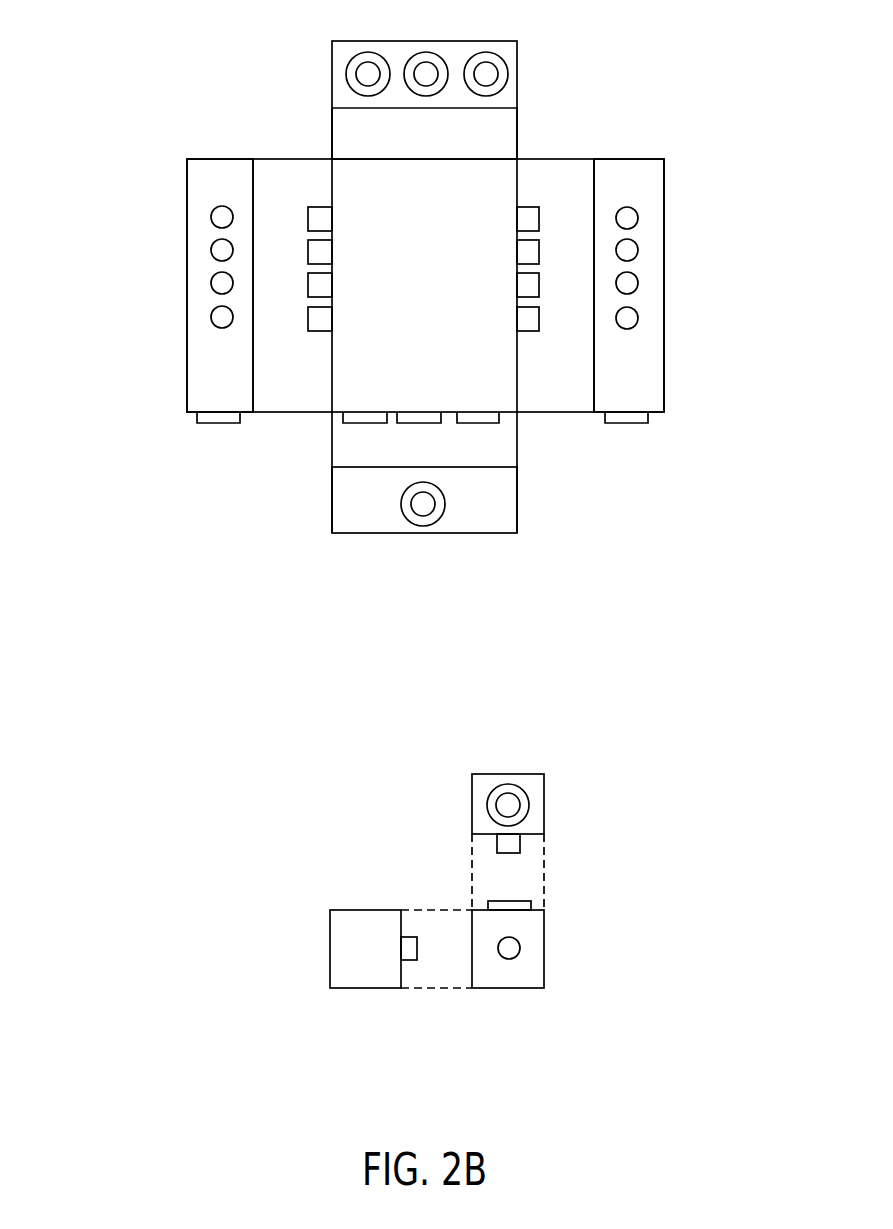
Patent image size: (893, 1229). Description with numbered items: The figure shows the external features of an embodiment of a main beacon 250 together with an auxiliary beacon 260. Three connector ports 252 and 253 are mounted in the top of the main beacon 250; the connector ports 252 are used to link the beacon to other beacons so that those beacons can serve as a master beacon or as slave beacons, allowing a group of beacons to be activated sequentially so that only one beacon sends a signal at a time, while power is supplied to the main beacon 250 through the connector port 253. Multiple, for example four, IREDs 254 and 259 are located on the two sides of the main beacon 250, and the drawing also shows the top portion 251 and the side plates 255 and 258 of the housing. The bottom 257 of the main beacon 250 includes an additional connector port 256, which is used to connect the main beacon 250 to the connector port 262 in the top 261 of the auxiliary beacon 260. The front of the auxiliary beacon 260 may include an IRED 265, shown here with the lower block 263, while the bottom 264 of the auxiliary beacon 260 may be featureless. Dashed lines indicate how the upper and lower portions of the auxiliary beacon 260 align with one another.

The main beacon 250 is at (277, 117).
The top connector block 251 is at (332, 72).
The connector ports 252 is at (426, 74).
The connector port 253 is at (486, 74).
The IREDs 254 is at (627, 218).
The right side plate 255 is at (664, 367).
The connector port 256 is at (423, 504).
The bottom 257 is at (360, 534).
The left side plate 258 is at (187, 363).
The IREDs 259 is at (222, 217).
The auxiliary beacon 260 is at (392, 785).
The top 261 is at (544, 797).
The connector port 262 is at (508, 805).
The lower right bracket block 263 is at (544, 945).
The bottom 264 is at (368, 988).
The IRED 265 is at (504, 942).